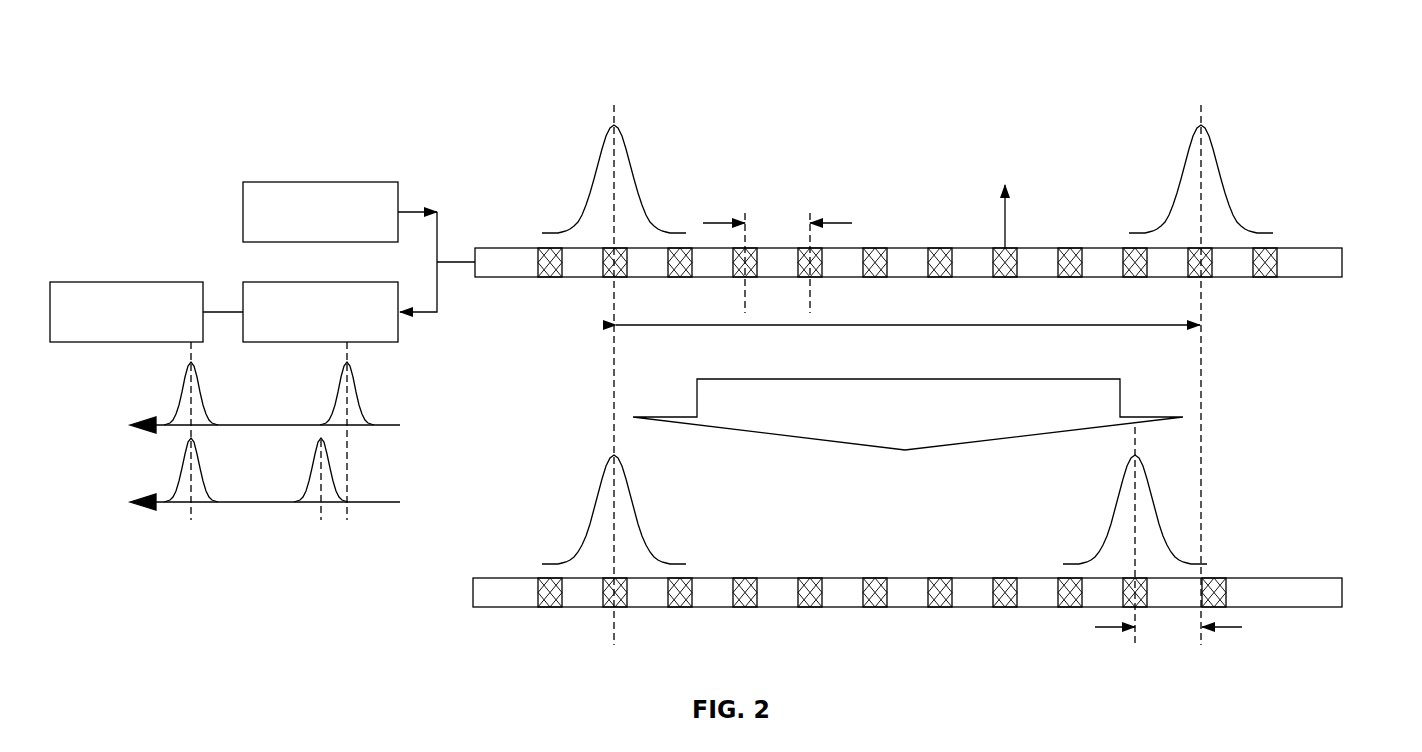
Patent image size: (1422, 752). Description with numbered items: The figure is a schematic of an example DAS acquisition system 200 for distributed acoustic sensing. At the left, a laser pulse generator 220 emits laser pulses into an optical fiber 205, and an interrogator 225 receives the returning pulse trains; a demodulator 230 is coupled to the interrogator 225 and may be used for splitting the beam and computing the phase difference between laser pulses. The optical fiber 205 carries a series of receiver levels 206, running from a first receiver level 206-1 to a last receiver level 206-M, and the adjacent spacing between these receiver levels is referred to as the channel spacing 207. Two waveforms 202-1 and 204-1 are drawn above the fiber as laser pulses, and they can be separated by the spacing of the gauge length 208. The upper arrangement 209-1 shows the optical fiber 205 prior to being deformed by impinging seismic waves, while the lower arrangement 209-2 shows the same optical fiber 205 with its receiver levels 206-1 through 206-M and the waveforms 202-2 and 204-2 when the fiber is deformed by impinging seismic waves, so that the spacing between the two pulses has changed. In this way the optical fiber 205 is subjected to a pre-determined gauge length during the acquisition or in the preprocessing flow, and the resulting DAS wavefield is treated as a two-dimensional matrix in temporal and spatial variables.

The DAS acquisition system 200 is at (170, 85).
The laser pulse generator 220 is at (308, 182).
The interrogator 225 is at (308, 342).
The demodulator 230 is at (115, 282).
The optical fiber 205 is at (1300, 278).
The receiver level 206 is at (545, 250).
The first receiver level 206-1 is at (545, 578).
The last receiver level 206-M is at (1270, 250).
The channel spacing 207 is at (833, 222).
The gauge length 208 is at (778, 328).
The first waveform 202-1 is at (610, 131).
The second waveform 204-1 is at (1195, 137).
The first deformed waveform 202-2 is at (608, 466).
The second deformed waveform 204-2 is at (1128, 476).
The undeformed arrangement 209-1 is at (1320, 192).
The deformed arrangement 209-2 is at (1320, 518).